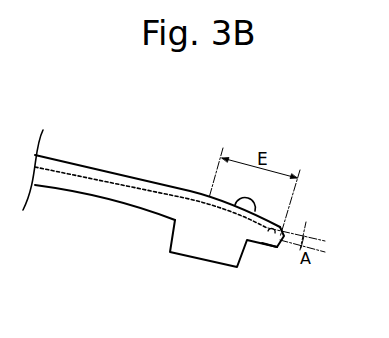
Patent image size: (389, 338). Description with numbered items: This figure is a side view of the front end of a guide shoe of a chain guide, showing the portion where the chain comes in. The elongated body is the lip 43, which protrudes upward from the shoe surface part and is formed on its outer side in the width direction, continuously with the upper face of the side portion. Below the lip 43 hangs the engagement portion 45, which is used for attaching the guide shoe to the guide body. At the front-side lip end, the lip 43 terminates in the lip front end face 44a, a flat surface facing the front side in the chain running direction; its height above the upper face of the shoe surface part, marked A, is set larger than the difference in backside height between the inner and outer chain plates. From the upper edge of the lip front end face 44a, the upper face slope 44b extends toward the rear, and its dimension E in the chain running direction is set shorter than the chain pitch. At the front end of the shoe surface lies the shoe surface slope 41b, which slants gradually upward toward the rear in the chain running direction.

The lip 43 is at (140, 179).
The engagement portion 45 is at (172, 236).
The lip front end face 44a is at (281, 235).
The upper face slope 44b is at (257, 203).
The shoe surface slope 41b is at (278, 246).